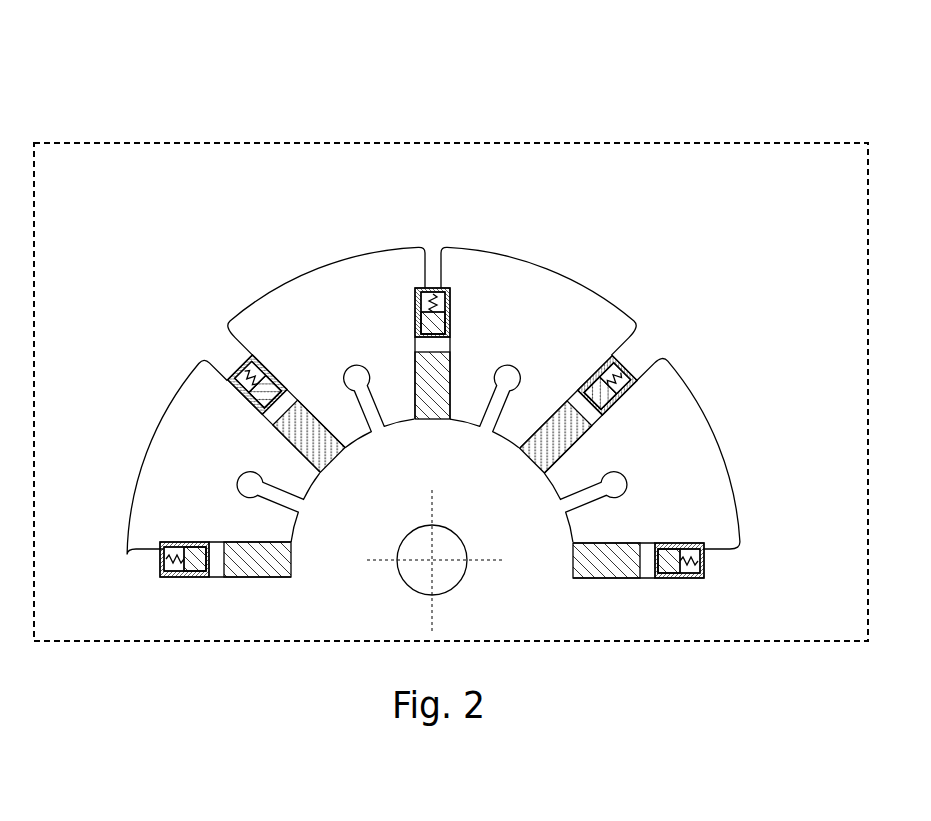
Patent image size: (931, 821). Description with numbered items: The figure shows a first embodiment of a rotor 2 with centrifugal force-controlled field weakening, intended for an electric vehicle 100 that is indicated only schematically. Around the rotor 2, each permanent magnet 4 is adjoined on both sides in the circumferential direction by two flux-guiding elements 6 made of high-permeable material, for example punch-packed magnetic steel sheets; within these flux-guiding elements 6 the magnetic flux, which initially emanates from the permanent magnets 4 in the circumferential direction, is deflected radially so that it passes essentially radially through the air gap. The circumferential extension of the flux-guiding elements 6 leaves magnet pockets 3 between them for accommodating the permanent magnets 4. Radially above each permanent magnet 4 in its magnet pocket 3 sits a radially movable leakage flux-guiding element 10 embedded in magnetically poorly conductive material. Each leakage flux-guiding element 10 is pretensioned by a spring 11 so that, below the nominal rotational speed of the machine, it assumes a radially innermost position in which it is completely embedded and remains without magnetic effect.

The electric vehicle 100 is at (302, 143).
The rotor 2 is at (640, 280).
The magnet pocket 3 is at (605, 424).
The permanent magnet 4 is at (415, 362).
The flux-guiding element 6 is at (537, 314).
The leakage flux-guiding element 10 is at (453, 322).
The spring 11 is at (635, 386).